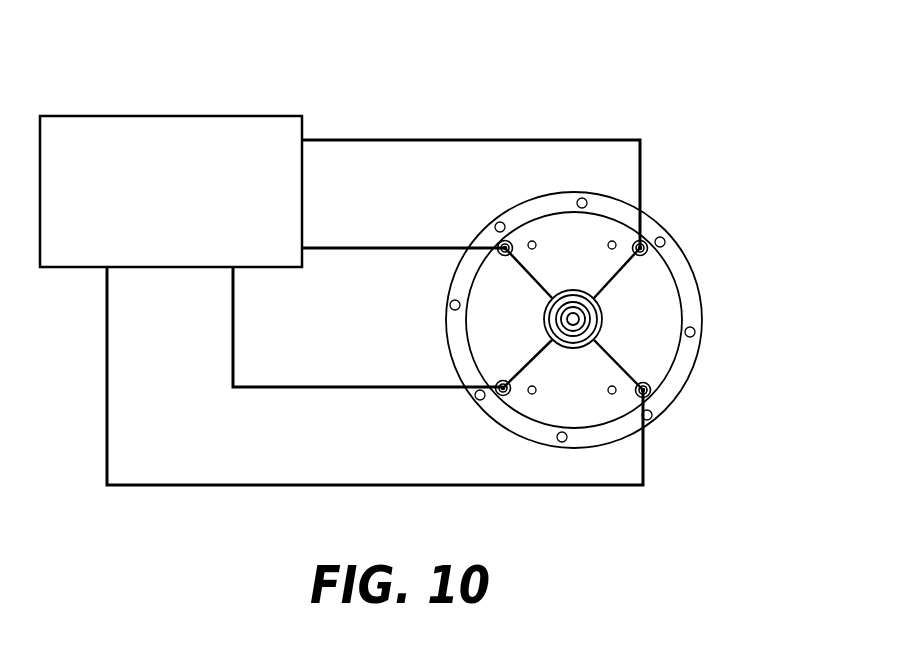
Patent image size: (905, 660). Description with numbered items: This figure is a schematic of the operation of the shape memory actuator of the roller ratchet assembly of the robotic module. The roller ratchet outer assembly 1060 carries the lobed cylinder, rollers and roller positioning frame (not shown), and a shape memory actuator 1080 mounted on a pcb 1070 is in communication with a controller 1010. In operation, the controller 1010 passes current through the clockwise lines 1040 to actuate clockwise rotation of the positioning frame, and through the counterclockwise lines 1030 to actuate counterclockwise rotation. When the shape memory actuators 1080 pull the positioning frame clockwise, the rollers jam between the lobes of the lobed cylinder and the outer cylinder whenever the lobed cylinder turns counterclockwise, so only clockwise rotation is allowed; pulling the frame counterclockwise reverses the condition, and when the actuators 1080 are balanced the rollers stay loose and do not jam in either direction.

The controller 1010 is at (165, 115).
The counterclockwise lines 1030 is at (425, 247).
The clockwise lines 1040 is at (427, 138).
The roller ratchet outer assembly 1060 is at (670, 407).
The pcb 1070 is at (672, 272).
The shape memory actuator 1080 is at (633, 363).